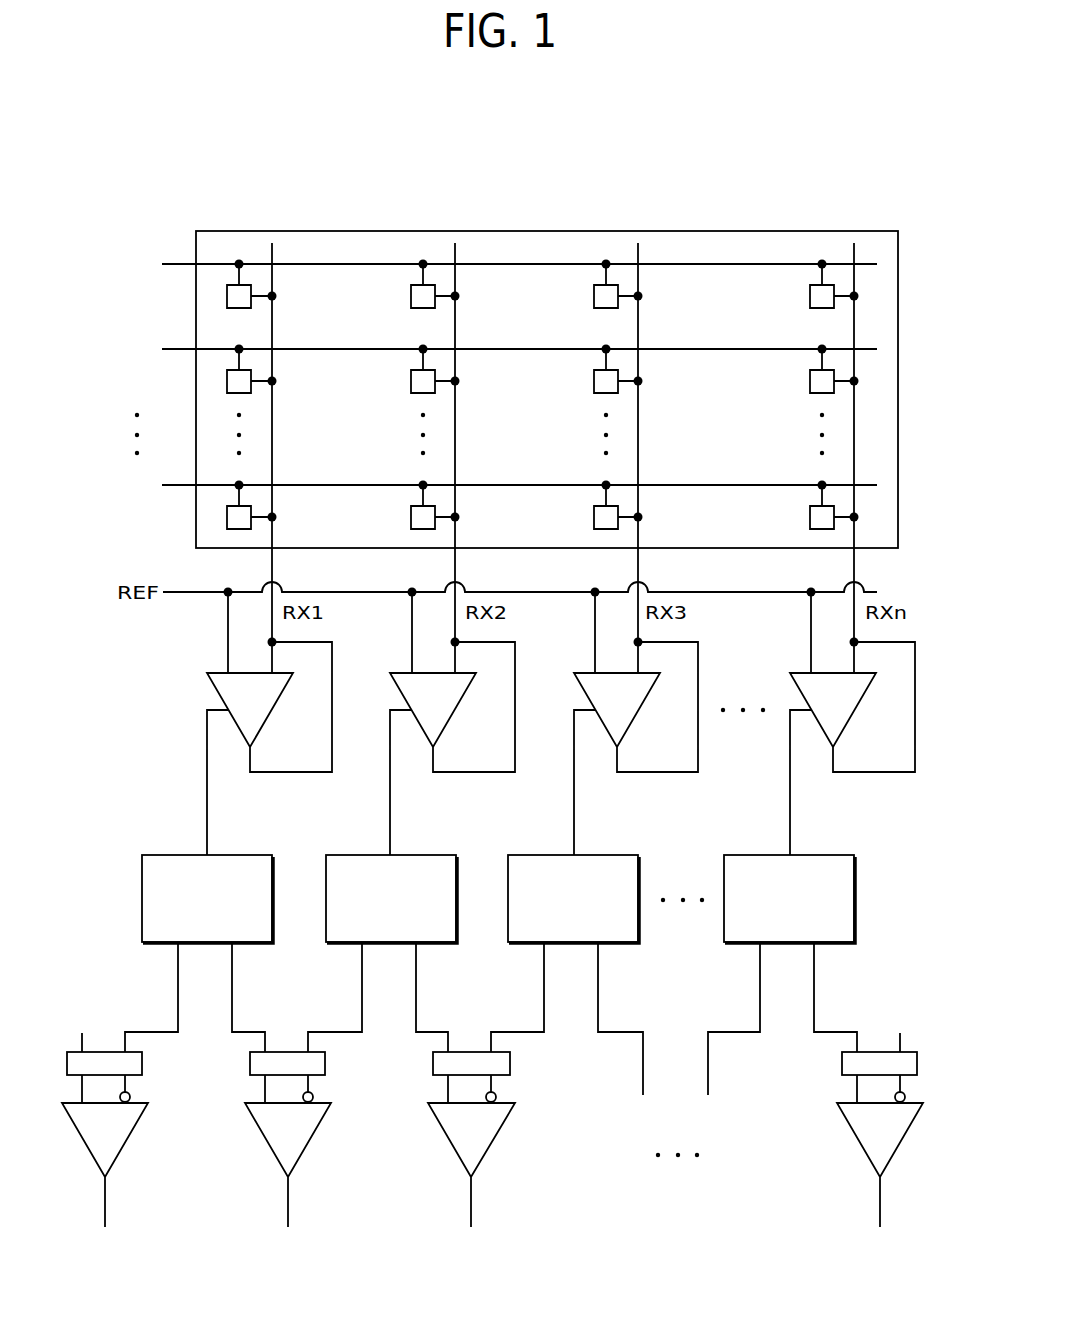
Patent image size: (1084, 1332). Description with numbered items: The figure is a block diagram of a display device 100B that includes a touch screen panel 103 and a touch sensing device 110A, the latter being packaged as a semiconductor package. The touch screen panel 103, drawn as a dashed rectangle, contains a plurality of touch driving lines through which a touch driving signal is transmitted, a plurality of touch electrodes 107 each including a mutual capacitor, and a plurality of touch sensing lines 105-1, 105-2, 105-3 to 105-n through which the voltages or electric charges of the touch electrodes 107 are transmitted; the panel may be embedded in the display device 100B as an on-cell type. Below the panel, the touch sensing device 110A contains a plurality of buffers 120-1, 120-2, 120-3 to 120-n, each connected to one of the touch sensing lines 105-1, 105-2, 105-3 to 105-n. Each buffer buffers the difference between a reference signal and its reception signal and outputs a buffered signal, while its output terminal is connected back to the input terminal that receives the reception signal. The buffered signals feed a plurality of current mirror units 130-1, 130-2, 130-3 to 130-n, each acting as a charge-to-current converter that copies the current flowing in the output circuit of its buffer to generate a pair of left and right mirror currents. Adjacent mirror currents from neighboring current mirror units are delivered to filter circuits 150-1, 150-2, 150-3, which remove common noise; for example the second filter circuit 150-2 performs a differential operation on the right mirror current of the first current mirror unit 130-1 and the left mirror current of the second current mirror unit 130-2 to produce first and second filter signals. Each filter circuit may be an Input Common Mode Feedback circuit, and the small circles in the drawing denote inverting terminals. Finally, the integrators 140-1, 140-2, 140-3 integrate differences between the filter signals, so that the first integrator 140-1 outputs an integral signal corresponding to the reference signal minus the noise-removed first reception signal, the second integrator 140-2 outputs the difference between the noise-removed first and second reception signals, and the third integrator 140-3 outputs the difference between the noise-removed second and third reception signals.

The display device 100B is at (597, 183).
The touch screen panel 103 is at (723, 231).
The touch sensing line 105-1 is at (274, 559).
The touch sensing line 105-2 is at (457, 559).
The touch sensing line 105-3 is at (640, 559).
The touch sensing line 105-n is at (856, 559).
The touch electrode 107 is at (808, 294).
The touch sensing device 110A is at (120, 694).
The buffer 120-1 is at (213, 670).
The buffer 120-2 is at (396, 670).
The buffer 120-3 is at (581, 670).
The buffer 120-n is at (797, 670).
The current mirror unit 130-1 is at (178, 853).
The current mirror unit 130-2 is at (361, 853).
The current mirror unit 130-3 is at (544, 853).
The current mirror unit 130-n is at (759, 853).
The integrator 140-1 is at (117, 1138).
The integrator 140-2 is at (300, 1138).
The integrator 140-3 is at (484, 1138).
The filter circuit 150-1 is at (143, 1071).
The filter circuit 150-2 is at (326, 1071).
The filter circuit 150-3 is at (511, 1071).